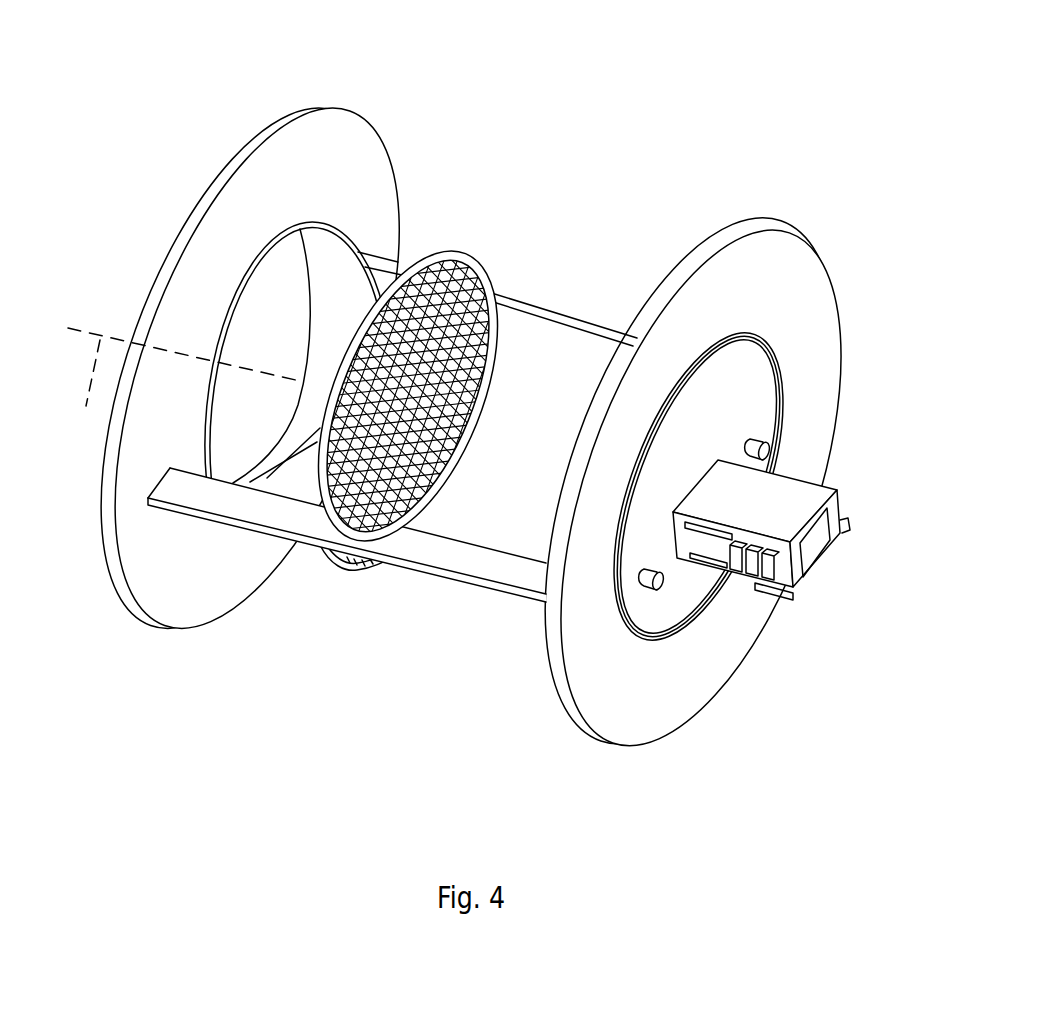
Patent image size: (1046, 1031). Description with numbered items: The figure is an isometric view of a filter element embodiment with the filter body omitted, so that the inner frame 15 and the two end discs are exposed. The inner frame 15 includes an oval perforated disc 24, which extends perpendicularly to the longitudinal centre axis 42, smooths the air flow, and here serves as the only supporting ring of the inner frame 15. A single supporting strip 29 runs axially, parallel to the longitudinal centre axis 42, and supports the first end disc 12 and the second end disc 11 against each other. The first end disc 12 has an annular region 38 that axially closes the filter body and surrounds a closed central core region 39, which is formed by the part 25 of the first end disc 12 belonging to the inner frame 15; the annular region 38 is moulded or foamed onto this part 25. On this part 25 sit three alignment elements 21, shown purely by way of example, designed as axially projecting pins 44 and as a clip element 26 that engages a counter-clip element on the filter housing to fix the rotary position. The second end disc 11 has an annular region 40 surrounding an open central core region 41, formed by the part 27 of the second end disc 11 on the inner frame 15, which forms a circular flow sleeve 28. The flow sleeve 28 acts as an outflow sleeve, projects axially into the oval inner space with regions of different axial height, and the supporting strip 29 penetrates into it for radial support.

The second end disc 11 is at (250, 334).
The first end disc 12 is at (692, 450).
The inner frame 15 is at (497, 271).
The alignment element 21 is at (775, 550).
The perforated disc 24 is at (460, 259).
The part of the first end disc 25 is at (657, 635).
The clip element 26 is at (807, 553).
The part of the second end disc 27 is at (230, 396).
The flow sleeve 28 is at (342, 292).
The supporting strip 29 is at (527, 293).
The annular region 38 is at (793, 270).
The core region 39 is at (740, 387).
The annular region 40 is at (370, 165).
The core region 41 is at (230, 396).
The longitudinal centre axis 42 is at (184, 383).
The pin 44 is at (778, 449).